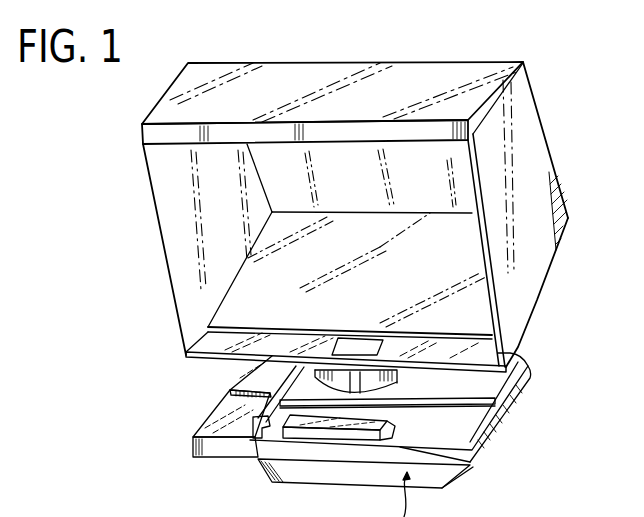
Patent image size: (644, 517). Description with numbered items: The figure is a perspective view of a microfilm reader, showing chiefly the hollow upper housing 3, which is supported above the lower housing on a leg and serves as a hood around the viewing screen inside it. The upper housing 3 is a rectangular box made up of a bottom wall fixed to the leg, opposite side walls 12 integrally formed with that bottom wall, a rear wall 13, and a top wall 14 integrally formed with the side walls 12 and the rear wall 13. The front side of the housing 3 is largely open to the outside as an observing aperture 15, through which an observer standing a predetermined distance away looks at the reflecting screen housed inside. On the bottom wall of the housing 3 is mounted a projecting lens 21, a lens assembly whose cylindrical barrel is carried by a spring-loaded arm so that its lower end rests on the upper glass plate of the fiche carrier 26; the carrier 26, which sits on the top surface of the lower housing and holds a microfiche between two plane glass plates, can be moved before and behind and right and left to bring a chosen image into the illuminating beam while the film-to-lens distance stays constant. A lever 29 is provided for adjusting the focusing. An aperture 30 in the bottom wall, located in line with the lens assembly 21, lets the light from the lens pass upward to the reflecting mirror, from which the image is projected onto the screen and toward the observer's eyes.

The upper housing 3 is at (350, 186).
The side walls 12 is at (533, 133).
The rear wall 13 is at (348, 170).
The top wall 14 is at (307, 73).
The observing aperture 15 is at (480, 232).
The projecting lens 21 is at (350, 390).
The fiche carrier 26 is at (290, 430).
The lever 29 is at (377, 380).
The aperture 30 is at (330, 345).